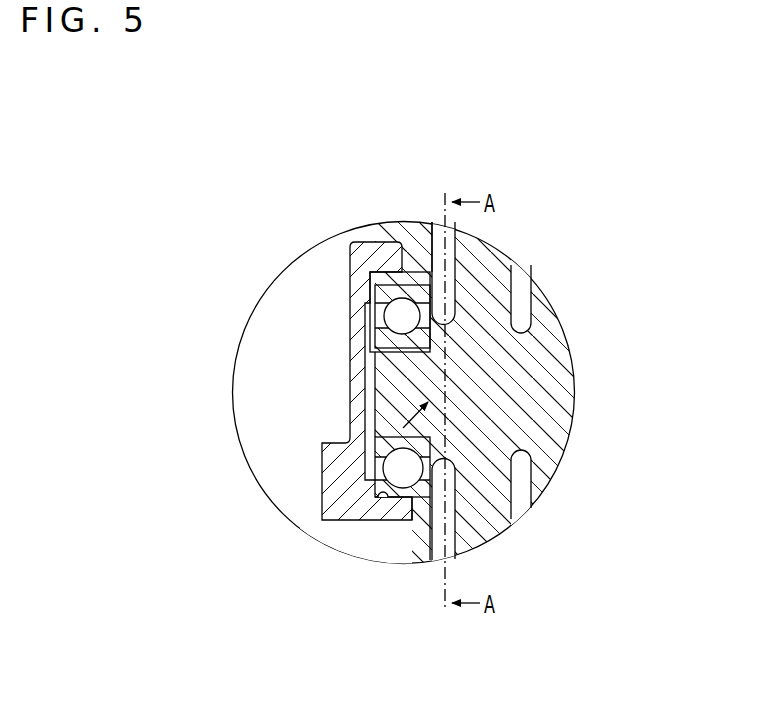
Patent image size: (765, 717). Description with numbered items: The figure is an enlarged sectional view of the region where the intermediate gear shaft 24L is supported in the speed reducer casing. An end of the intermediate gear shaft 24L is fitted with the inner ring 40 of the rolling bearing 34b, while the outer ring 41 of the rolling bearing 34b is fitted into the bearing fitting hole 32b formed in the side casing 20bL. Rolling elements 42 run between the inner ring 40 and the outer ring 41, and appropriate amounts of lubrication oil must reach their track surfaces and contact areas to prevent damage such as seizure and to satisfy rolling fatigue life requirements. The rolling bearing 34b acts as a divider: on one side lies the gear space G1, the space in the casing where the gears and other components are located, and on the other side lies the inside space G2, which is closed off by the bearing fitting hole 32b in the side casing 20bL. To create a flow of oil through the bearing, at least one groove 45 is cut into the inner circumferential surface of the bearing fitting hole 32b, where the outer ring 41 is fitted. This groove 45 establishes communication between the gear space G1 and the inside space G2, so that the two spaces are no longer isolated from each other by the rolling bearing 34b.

The inner ring 40 is at (433, 345).
The side casing 20bL is at (383, 249).
The groove 45 is at (401, 278).
The outer ring 41 is at (428, 288).
The rolling element 42 is at (423, 318).
The intermediate gear shaft 24L is at (385, 460).
The bearing fitting hole 32b is at (383, 497).
The rolling bearing 34b is at (418, 499).
The gear space G1 is at (441, 266).
The inside space G2 is at (370, 378).